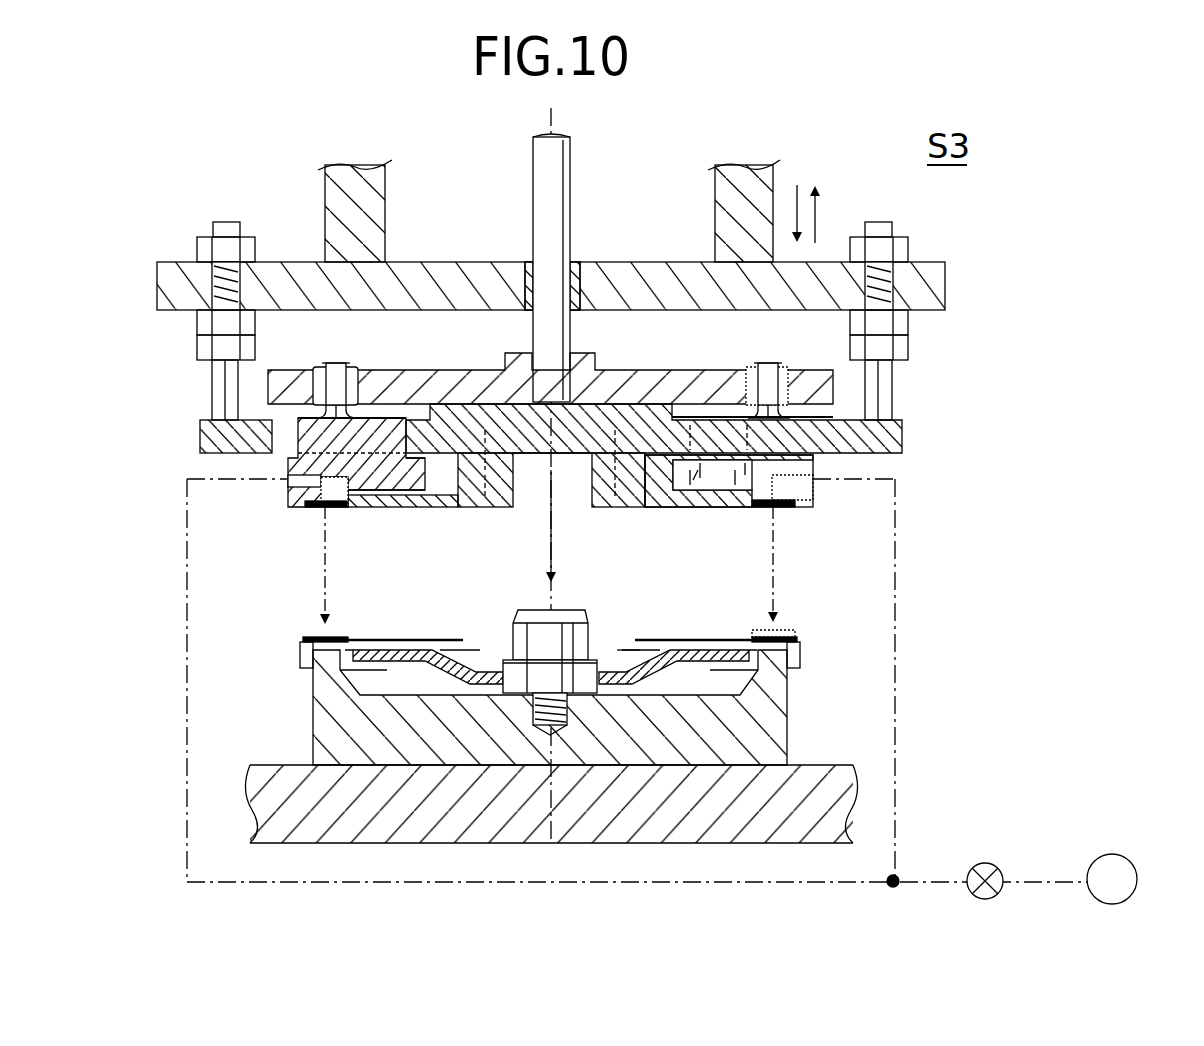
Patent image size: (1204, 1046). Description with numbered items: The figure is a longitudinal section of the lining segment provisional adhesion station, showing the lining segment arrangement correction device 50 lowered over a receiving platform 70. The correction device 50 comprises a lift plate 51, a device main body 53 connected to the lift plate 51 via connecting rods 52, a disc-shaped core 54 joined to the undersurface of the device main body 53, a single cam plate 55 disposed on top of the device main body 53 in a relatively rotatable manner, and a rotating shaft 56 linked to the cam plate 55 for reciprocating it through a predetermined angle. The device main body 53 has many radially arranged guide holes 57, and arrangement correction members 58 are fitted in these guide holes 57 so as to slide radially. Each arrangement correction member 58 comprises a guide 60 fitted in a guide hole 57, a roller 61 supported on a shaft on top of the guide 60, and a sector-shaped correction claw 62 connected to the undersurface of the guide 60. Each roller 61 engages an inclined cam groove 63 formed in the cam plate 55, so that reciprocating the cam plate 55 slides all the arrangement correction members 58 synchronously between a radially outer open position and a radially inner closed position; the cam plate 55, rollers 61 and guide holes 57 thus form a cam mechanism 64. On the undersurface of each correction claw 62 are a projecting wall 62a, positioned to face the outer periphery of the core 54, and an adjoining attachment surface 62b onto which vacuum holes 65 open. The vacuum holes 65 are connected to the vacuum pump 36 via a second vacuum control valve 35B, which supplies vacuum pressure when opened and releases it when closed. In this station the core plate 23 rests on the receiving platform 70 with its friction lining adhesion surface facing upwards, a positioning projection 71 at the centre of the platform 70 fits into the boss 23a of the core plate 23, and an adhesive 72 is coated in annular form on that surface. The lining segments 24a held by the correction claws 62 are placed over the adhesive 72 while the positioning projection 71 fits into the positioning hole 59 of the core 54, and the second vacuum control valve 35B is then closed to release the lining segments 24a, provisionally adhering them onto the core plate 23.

The lining segment arrangement correction device 50 is at (922, 240).
The lift plate 51 is at (470, 262).
The connecting rods 52 is at (220, 375).
The device main body 53 is at (903, 440).
The disc-shaped core 54 is at (697, 508).
The cam plate 55 is at (647, 385).
The rotating shaft 56 is at (570, 193).
The guide holes 57 is at (272, 440).
The arrangement correction members 58 is at (374, 414).
The positioning hole 59 is at (512, 508).
The guide 60 is at (307, 437).
The roller 61 is at (340, 365).
The correction claw 62 is at (392, 477).
The projecting wall 62a is at (313, 511).
The attachment surface 62b is at (340, 509).
The cam groove 63 is at (320, 373).
The cam mechanism 64 is at (783, 338).
The vacuum holes 65 is at (292, 488).
The lining segments 24a is at (322, 512).
The receiving platform 70 is at (332, 713).
The positioning projection 71 is at (567, 623).
The adhesive 72 is at (795, 632).
The core plate 23 is at (688, 650).
The boss 23a is at (632, 680).
The second vacuum control valve 35B is at (985, 862).
The vacuum pump 36 is at (1112, 853).